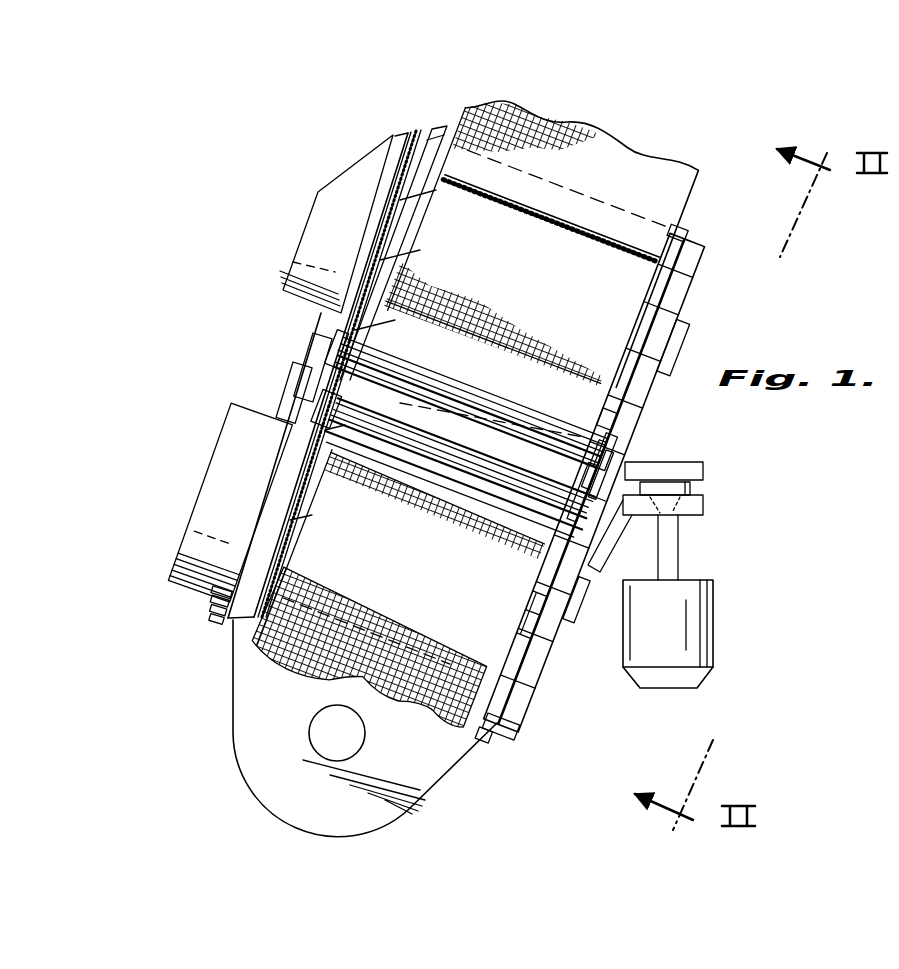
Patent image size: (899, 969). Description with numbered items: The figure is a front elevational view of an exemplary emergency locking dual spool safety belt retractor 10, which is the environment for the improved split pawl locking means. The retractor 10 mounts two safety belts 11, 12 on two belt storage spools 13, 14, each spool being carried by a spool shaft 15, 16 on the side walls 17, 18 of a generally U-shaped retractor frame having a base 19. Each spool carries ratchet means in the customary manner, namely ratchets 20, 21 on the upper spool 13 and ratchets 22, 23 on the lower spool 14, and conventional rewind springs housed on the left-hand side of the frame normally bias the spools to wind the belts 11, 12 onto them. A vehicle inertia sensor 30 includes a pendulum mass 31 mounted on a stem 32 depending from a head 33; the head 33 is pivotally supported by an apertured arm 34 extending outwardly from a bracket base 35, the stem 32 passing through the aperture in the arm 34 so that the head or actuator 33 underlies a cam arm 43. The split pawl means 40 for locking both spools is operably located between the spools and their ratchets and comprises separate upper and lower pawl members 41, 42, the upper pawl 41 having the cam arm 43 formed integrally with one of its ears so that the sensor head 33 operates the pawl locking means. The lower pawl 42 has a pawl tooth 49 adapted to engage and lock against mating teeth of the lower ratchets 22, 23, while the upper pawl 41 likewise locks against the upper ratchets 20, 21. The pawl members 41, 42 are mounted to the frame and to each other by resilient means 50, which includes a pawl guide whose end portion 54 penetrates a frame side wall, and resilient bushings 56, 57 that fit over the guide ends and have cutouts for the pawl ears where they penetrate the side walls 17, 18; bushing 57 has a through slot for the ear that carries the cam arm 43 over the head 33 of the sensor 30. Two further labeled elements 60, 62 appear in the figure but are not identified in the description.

The emergency locking dual spool safety belt retractor 10 is at (238, 332).
The safety belt 11 is at (640, 168).
The safety belt 12 is at (325, 680).
The belt storage spool 13 is at (660, 300).
The belt storage spool 14 is at (509, 687).
The spool shaft 15 is at (650, 338).
The spool shaft 16 is at (530, 610).
The side wall 17 is at (390, 207).
The side wall 18 is at (697, 272).
The base 19 is at (290, 480).
The ratchet 20 is at (318, 192).
The ratchet 21 is at (678, 234).
The ratchet 22 is at (250, 633).
The ratchet 23 is at (490, 725).
The vehicle inertia sensor 30 is at (702, 551).
The pendulum mass 31 is at (678, 647).
The stem 32 is at (660, 550).
The head 33 is at (690, 484).
The apertured arm 34 is at (703, 506).
The bracket base 35 is at (575, 588).
The split pawl means 40 is at (495, 383).
The pawl member 41 is at (403, 372).
The pawl member 42 is at (380, 435).
The cam arm 43 is at (705, 467).
The pawl tooth 49 is at (503, 483).
The resilient means 50 is at (652, 437).
The end portion of guide 54 is at (483, 440).
The resilient bushing 56 is at (322, 338).
The resilient bushing 57 is at (607, 420).
The slide block 60 is at (335, 365).
The clamp 62 is at (585, 476).